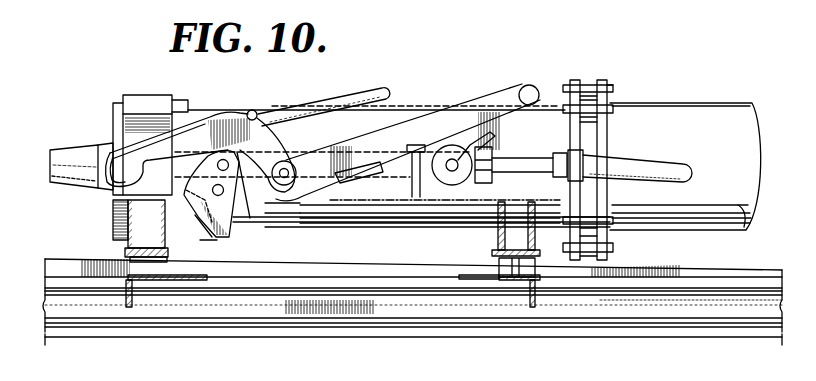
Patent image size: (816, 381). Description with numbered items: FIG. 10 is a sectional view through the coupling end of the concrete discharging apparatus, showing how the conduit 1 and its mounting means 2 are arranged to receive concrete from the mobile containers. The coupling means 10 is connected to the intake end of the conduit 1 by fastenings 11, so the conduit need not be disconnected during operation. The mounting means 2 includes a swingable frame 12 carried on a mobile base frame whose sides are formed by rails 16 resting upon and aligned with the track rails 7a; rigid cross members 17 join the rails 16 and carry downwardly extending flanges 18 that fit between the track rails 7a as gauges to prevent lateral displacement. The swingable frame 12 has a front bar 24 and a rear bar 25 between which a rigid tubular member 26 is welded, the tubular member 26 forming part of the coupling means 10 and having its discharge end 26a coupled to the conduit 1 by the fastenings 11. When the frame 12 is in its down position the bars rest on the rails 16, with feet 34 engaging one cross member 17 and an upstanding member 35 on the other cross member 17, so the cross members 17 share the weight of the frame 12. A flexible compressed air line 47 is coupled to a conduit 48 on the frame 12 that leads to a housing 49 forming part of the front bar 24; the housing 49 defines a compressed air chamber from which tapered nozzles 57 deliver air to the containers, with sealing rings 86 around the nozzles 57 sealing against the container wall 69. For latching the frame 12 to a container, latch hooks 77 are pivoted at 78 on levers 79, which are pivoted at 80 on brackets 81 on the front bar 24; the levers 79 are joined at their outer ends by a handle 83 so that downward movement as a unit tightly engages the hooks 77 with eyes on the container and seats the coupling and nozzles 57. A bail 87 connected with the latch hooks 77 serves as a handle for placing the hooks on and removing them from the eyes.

The conduit 1 is at (729, 102).
The mounting means 2 is at (408, 110).
The track rail 7a is at (716, 306).
The coupling means 10 is at (544, 111).
The fastenings 11 is at (614, 88).
The swingable frame 12 is at (124, 242).
The rails 16 is at (678, 263).
The cross members 17 is at (162, 282).
The flanges 18 is at (130, 300).
The front bar 24 is at (128, 208).
The rear bar 25 is at (496, 235).
The tubular member 26 is at (332, 221).
The discharge end 26a is at (574, 88).
The feet 34 is at (498, 265).
The upstanding member 35 is at (539, 261).
The flexible compressed air line 47 is at (672, 172).
The conduit 48 is at (412, 186).
The housing 49 is at (150, 104).
The tapered nozzles 57 is at (60, 148).
The wall 69 is at (500, 135).
The latch hooks 77 is at (211, 125).
The pivot 78 is at (291, 168).
The levers 79 is at (445, 118).
The pivot 80 is at (244, 194).
The brackets 81 is at (216, 218).
The cross member or handle 83 is at (532, 85).
The sealing rings 86 is at (108, 154).
The bail 87 is at (364, 94).